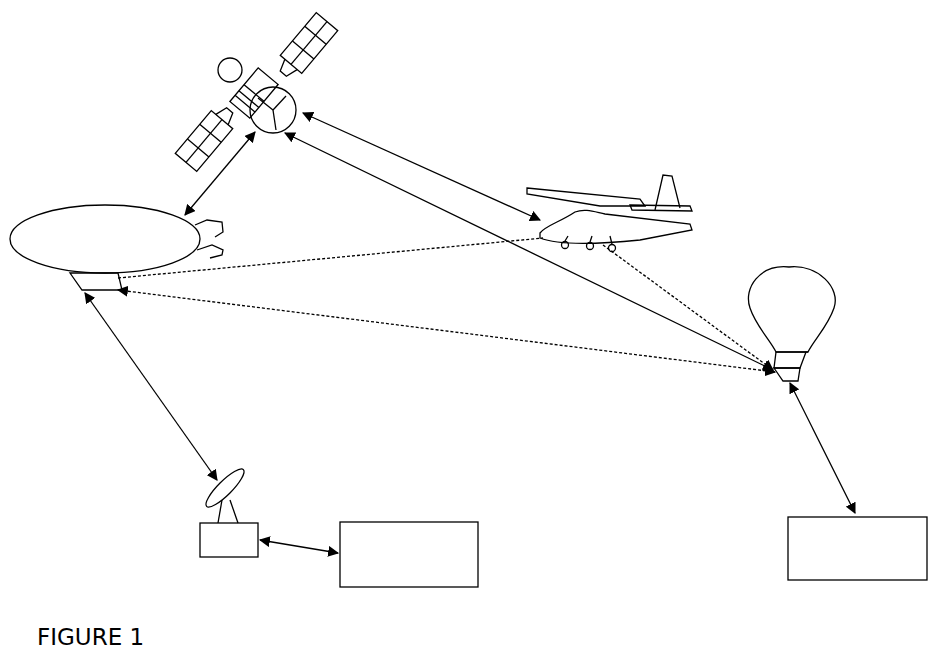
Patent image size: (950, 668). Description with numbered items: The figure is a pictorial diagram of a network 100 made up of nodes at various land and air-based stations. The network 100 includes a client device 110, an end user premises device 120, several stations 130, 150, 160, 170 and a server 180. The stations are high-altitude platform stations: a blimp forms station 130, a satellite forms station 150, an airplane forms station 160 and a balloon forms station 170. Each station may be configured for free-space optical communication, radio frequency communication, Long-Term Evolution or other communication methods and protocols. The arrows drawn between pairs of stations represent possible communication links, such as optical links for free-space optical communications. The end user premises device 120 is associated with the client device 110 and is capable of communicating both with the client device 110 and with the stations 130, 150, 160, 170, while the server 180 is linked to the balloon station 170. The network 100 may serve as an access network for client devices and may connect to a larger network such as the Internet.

The network 100 is at (97, 620).
The client device 110 is at (409, 554).
The end user premises device 120 is at (229, 511).
The station 130 is at (105, 215).
The station 150 is at (218, 62).
The station 160 is at (580, 197).
The station 170 is at (798, 282).
The server 180 is at (857, 548).